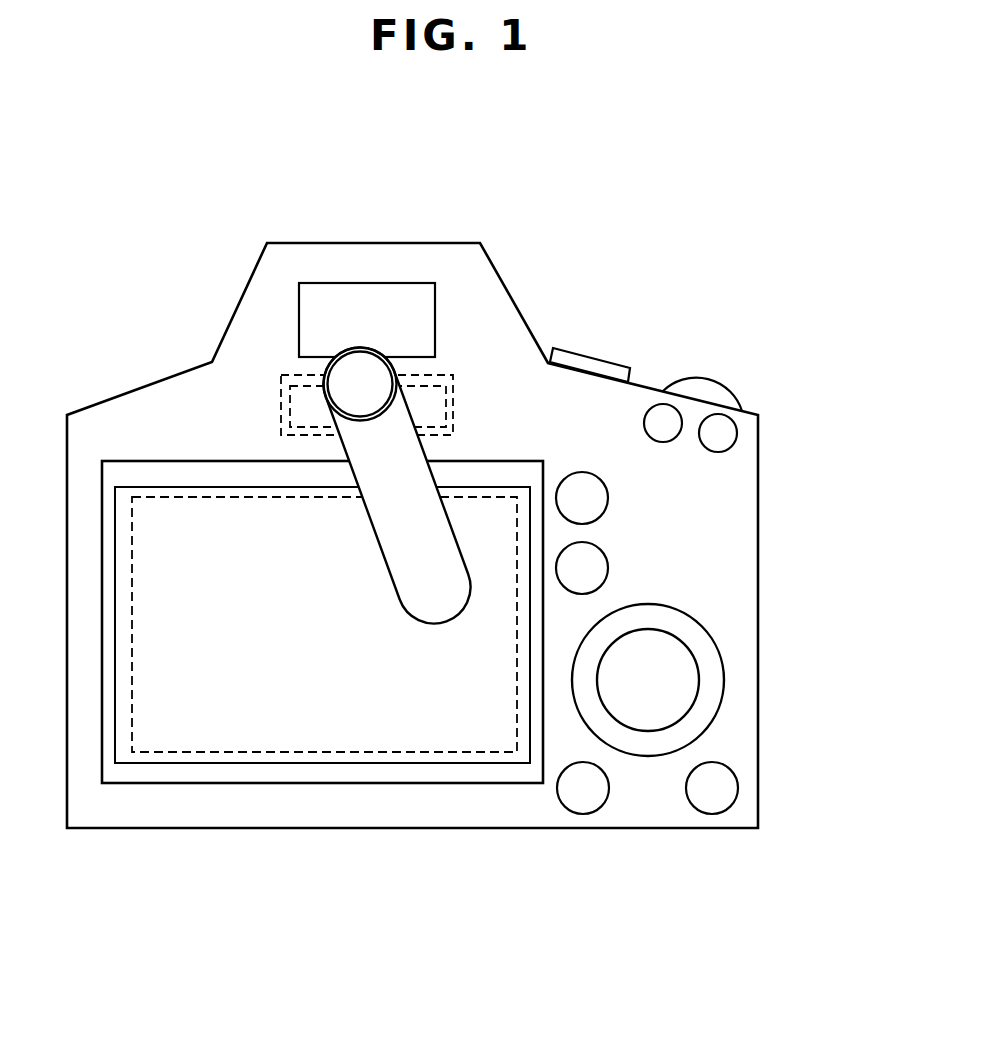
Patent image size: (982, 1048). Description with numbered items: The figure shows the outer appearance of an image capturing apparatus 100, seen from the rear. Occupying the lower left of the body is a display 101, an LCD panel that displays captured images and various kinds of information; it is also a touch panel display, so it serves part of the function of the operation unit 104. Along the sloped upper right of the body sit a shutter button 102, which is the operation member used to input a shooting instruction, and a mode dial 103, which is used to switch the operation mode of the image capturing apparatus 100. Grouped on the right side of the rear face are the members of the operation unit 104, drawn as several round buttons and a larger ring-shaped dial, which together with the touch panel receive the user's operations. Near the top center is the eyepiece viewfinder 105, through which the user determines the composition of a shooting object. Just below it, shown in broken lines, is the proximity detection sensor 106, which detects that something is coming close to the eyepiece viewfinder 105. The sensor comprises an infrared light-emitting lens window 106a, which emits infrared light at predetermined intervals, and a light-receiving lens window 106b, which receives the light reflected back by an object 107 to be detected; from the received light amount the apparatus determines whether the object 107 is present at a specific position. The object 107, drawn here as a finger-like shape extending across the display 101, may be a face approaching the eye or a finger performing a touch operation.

The image capturing apparatus 100 is at (365, 815).
The display 101 is at (202, 755).
The shutter button 102 is at (720, 380).
The mode dial 103 is at (606, 360).
The operation unit 104 is at (602, 766).
The eyepiece viewfinder 105 is at (418, 288).
The proximity detection sensor 106 is at (344, 343).
The infrared light-emitting lens window 106a is at (285, 400).
The light-receiving lens window 106b is at (440, 387).
The object to be detected 107 is at (362, 348).